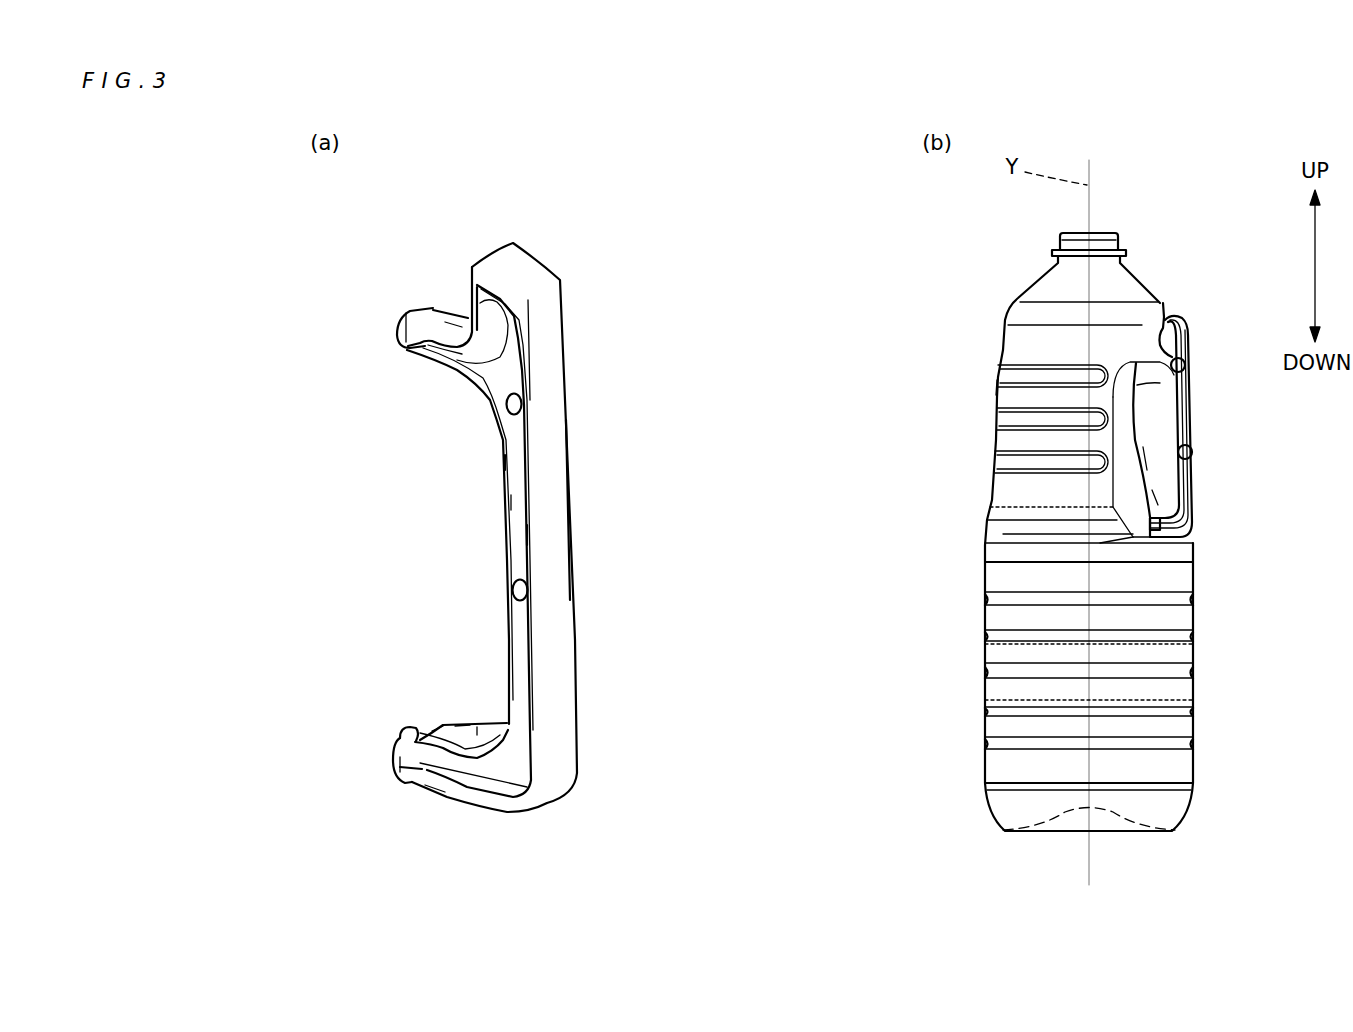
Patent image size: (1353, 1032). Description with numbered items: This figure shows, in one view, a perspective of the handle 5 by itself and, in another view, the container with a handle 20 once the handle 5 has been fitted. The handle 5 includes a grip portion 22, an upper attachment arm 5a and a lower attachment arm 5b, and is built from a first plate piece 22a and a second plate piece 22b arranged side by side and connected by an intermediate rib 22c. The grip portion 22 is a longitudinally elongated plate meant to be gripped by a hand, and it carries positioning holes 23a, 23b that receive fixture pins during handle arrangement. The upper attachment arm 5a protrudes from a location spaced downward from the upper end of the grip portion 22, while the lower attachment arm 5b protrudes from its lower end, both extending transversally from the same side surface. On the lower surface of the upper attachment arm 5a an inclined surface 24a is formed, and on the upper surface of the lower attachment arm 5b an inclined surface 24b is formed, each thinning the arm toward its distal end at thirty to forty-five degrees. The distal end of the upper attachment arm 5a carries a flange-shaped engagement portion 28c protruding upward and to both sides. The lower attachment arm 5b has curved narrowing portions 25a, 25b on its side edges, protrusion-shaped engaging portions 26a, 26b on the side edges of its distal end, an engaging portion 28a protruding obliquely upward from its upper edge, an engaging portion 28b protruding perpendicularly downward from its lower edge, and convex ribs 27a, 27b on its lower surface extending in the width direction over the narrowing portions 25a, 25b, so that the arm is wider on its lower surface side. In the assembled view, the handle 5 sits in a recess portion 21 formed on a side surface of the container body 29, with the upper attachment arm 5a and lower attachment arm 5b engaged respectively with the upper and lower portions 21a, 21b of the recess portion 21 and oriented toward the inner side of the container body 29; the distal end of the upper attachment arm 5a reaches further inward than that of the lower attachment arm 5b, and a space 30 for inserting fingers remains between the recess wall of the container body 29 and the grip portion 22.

The handle 5 is at (583, 252).
The upper attachment arm 5a is at (448, 327).
The lower attachment arm 5b is at (477, 727).
The container with a handle 20 is at (1168, 206).
The recess portion 21 is at (1143, 447).
The upper portion of the recess portion 21a is at (1137, 385).
The lower portion of the recess portion 21b is at (1160, 490).
The grip portion 22 is at (567, 498).
The first plate piece 22a is at (505, 463).
The second plate piece 22b is at (528, 534).
The intermediate rib 22c is at (520, 502).
The positioning hole 23a is at (514, 402).
The positioning hole 23b is at (522, 596).
The inclined surface 24a is at (417, 353).
The inclined surface 24b is at (437, 727).
The narrowing portion 25a is at (428, 786).
The narrowing portion 25b is at (463, 717).
The engaging portion 26a is at (393, 761).
The engaging portion 26b is at (407, 728).
The rib 27a is at (427, 786).
The rib 27b is at (443, 732).
The engaging portion 28a is at (398, 733).
The engaging portion 28b is at (400, 782).
The engagement portion 28c is at (403, 318).
The container body 29 is at (1003, 389).
The space 30 is at (1157, 408).